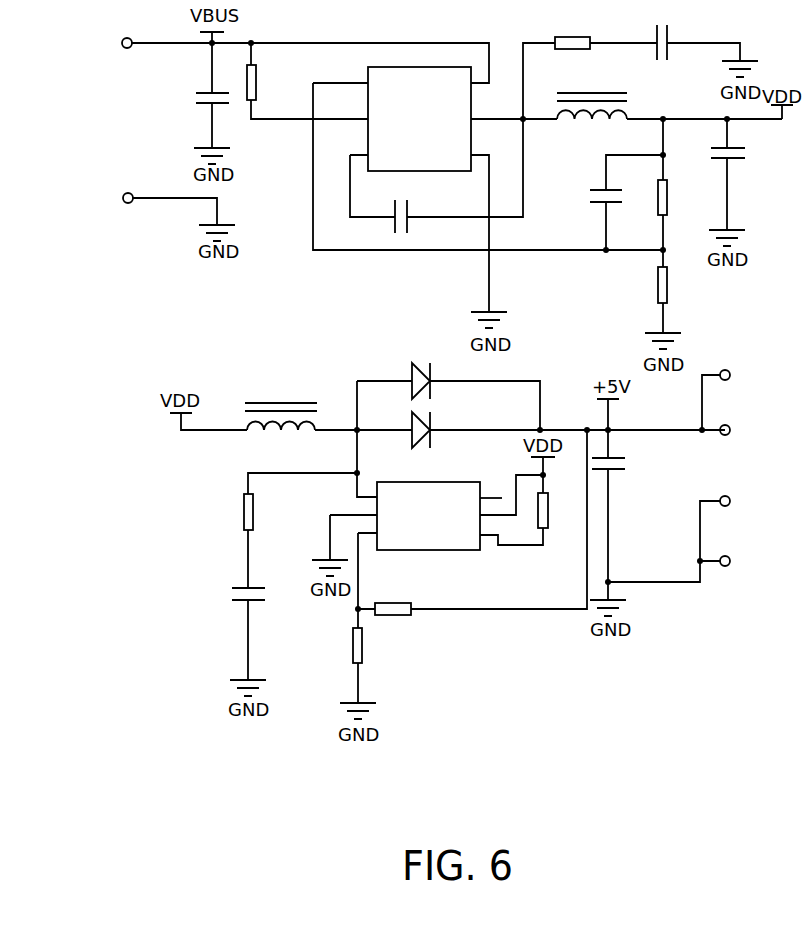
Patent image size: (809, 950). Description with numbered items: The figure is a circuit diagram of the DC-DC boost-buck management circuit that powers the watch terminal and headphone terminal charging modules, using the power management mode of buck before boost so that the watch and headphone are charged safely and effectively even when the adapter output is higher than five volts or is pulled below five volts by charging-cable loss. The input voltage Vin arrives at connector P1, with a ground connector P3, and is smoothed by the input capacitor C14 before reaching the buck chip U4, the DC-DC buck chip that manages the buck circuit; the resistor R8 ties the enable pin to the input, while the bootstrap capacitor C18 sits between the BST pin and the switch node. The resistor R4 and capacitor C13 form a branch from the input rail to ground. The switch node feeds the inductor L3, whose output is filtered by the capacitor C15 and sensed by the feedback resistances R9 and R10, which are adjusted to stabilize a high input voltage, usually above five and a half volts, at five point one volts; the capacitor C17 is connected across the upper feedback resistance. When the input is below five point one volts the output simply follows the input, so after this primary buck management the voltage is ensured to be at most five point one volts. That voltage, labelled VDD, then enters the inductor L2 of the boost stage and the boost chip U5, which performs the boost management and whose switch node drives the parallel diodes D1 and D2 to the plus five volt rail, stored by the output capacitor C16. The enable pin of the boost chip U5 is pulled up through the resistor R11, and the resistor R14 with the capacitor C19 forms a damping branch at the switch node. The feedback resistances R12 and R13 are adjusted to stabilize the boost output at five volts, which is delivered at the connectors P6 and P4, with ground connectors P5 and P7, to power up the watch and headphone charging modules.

The input connector Vin P1 is at (149, 38).
The ground connector P3 is at (154, 203).
The input capacitor 226/25V C14 is at (182, 95).
The resistor 10K R8 is at (307, 81).
The buck converter ETA2847 U4 is at (488, 178).
The bootstrap capacitor 104/25V C18 is at (459, 180).
The resistor 2R R4 is at (590, 66).
The capacitor 102/50V C13 is at (692, 40).
The inductor 4.7uH L3 is at (652, 119).
The feedback resistance R9 is at (687, 184).
The capacitor 22pF C17 is at (607, 202).
The feedback resistance R10 is at (684, 291).
The output capacitor 226/25V C15 is at (760, 174).
The inductor 4.7uH L2 is at (294, 401).
The Schottky diode SS24 D1 is at (448, 393).
The Schottky diode SS24 D2 is at (541, 429).
The boost converter TC3608 U5 is at (436, 544).
The feedback resistance R13 is at (377, 663).
The feedback resistance R12 is at (472, 522).
The enable pull-up resistor 10K R11 is at (563, 503).
The resistor 2R R14 is at (300, 530).
The capacitor 102/50V C19 is at (280, 624).
The output capacitor 226/25V C16 is at (644, 515).
The +5V output connector P6 is at (729, 388).
The +5V output connector P4 is at (730, 427).
The ground connector P5 is at (728, 517).
The ground connector P7 is at (683, 557).